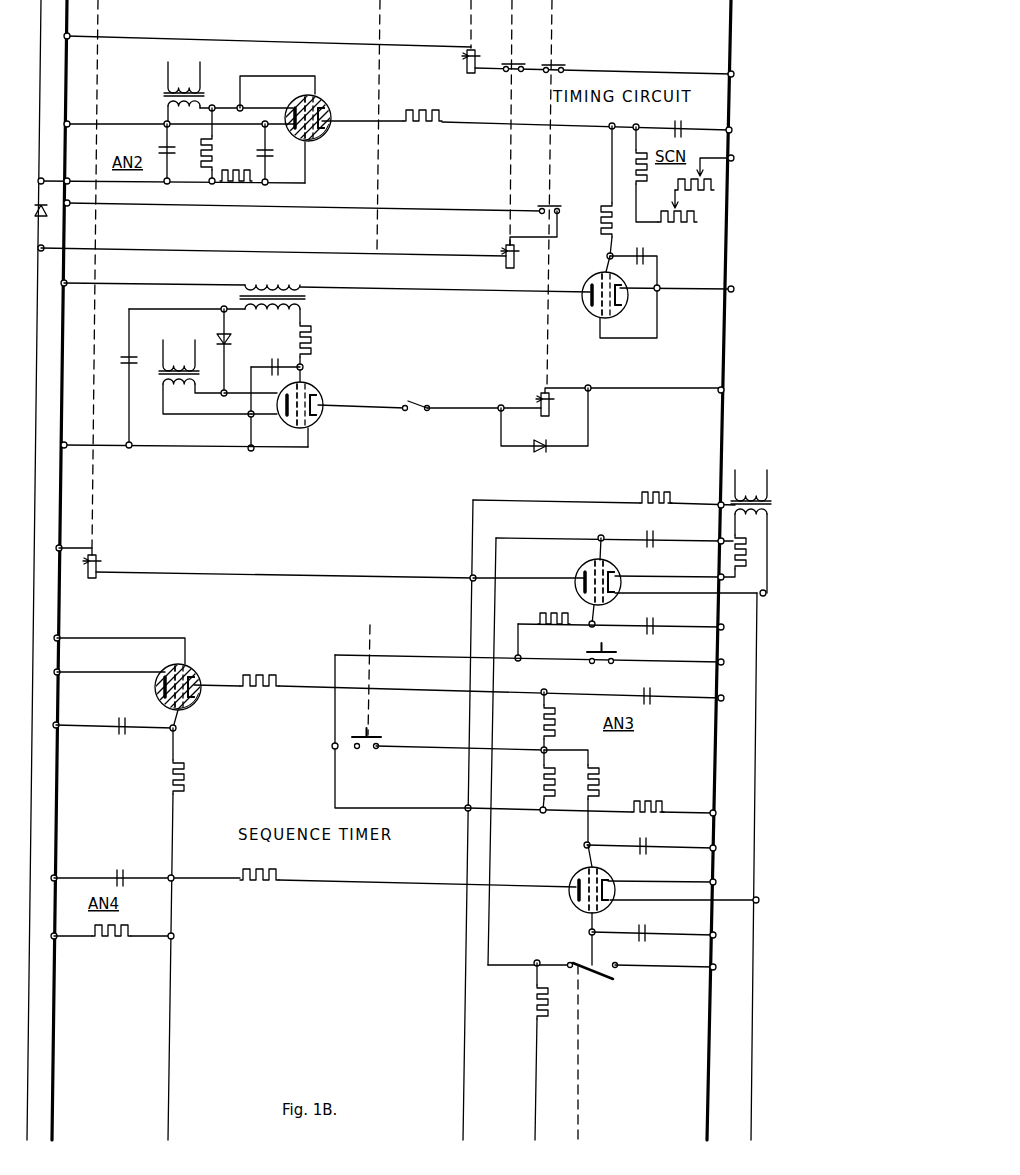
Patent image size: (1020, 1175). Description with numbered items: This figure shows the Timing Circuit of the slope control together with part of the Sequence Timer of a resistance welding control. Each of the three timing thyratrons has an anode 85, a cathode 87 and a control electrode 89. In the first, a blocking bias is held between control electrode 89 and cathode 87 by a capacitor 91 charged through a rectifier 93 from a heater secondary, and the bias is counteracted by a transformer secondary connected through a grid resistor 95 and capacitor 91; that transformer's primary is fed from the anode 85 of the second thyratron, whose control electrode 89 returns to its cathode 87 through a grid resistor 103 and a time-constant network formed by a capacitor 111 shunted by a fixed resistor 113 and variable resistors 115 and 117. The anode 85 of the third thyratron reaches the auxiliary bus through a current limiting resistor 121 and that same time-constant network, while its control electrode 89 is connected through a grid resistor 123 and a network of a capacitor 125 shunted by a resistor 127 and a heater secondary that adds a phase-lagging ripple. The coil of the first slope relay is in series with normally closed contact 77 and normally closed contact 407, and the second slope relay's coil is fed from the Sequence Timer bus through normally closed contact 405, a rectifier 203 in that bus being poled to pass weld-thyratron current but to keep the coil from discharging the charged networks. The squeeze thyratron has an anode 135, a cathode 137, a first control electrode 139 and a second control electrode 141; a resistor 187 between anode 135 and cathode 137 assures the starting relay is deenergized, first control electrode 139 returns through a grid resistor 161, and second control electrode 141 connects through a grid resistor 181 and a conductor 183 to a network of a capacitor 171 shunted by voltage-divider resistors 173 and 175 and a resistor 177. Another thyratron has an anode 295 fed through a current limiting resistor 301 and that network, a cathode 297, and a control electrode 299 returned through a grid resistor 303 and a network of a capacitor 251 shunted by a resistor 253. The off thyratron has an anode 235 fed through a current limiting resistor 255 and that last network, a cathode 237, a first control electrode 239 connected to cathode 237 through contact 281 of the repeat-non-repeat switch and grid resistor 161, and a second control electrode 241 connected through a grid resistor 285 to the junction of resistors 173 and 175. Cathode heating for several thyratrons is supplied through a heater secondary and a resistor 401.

The rectifier 203 is at (38, 218).
The capacitor 125 is at (160, 151).
The resistor 127 is at (200, 153).
The grid resistor 123 is at (226, 173).
The cathode 87 is at (292, 103).
The anode 85 is at (327, 122).
The control electrode 89 is at (314, 140).
The current limiting resistor 121 is at (422, 122).
The normally closed contact 77 is at (506, 73).
The normally closed contact 407 is at (555, 64).
The capacitor 111 is at (678, 128).
The fixed resistor 113 is at (634, 156).
The grid resistor 103 is at (610, 202).
The variable resistor 117 is at (709, 186).
The variable resistor 115 is at (678, 226).
The normally closed contact 405 is at (540, 206).
The capacitor 91 is at (128, 356).
The rectifier 93 is at (226, 342).
The grid resistor 95 is at (307, 338).
The resistor 187 is at (646, 492).
The second control electrode 141 is at (588, 560).
The anode 135 is at (582, 574).
The first control electrode 139 is at (618, 569).
The resistor 401 is at (732, 552).
The cathode 137 is at (620, 598).
The grid resistor 181 is at (562, 630).
The conductor 183 is at (396, 656).
The control electrode 299 is at (168, 665).
The current limiting resistor 301 is at (257, 675).
The capacitor 171 is at (642, 696).
The cathode 297 is at (158, 689).
The anode 295 is at (200, 700).
The fixed resistor 173 is at (544, 716).
The grid resistor 303 is at (184, 764).
The fixed resistor 175 is at (542, 784).
The grid resistor 285 is at (598, 773).
The fixed resistor 177 is at (639, 803).
The capacitor 251 is at (120, 874).
The current limiting resistor 255 is at (275, 874).
The second control electrode 241 is at (588, 864).
The first control electrode 239 is at (608, 872).
The anode 235 is at (576, 884).
The cathode 237 is at (618, 906).
The resistor 253 is at (122, 944).
The contact 281 is at (588, 964).
The grid resistor 161 is at (536, 995).